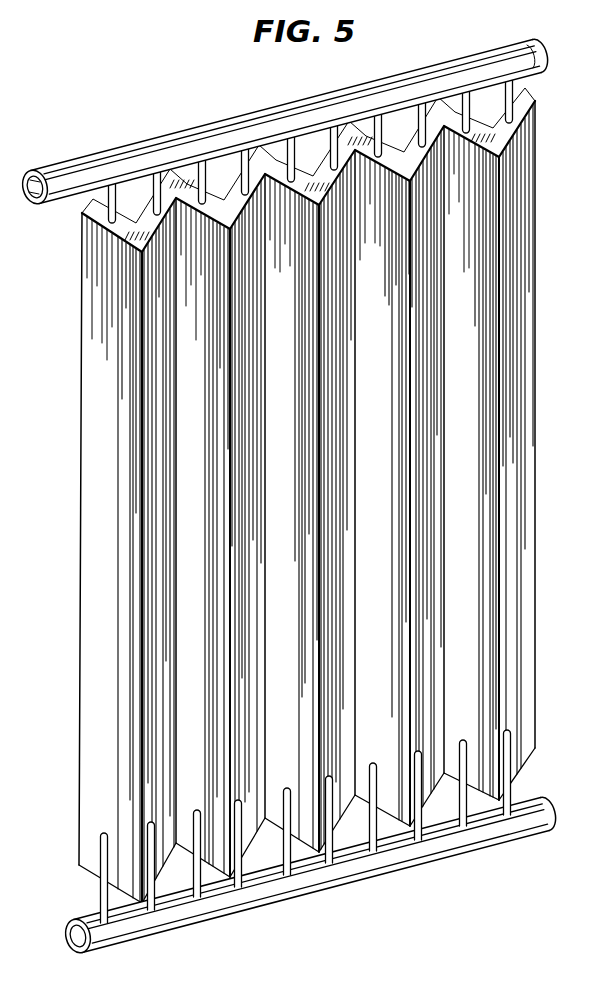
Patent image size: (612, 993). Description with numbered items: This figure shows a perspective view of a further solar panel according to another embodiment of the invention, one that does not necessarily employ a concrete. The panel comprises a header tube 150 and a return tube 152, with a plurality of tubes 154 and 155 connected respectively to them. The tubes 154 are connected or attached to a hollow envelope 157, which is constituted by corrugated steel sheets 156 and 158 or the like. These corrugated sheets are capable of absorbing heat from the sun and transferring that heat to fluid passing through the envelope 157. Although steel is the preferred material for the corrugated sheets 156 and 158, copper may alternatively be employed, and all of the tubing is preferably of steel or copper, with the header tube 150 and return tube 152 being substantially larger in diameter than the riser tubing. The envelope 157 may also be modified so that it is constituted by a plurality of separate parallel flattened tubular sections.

The header tube 150 is at (219, 137).
The return tube 152 is at (227, 900).
The tubes 154 is at (100, 894).
The tubes 155 is at (491, 82).
The corrugated steel sheet 156 is at (97, 253).
The hollow envelope 157 is at (73, 658).
The corrugated steel sheet 158 is at (121, 216).